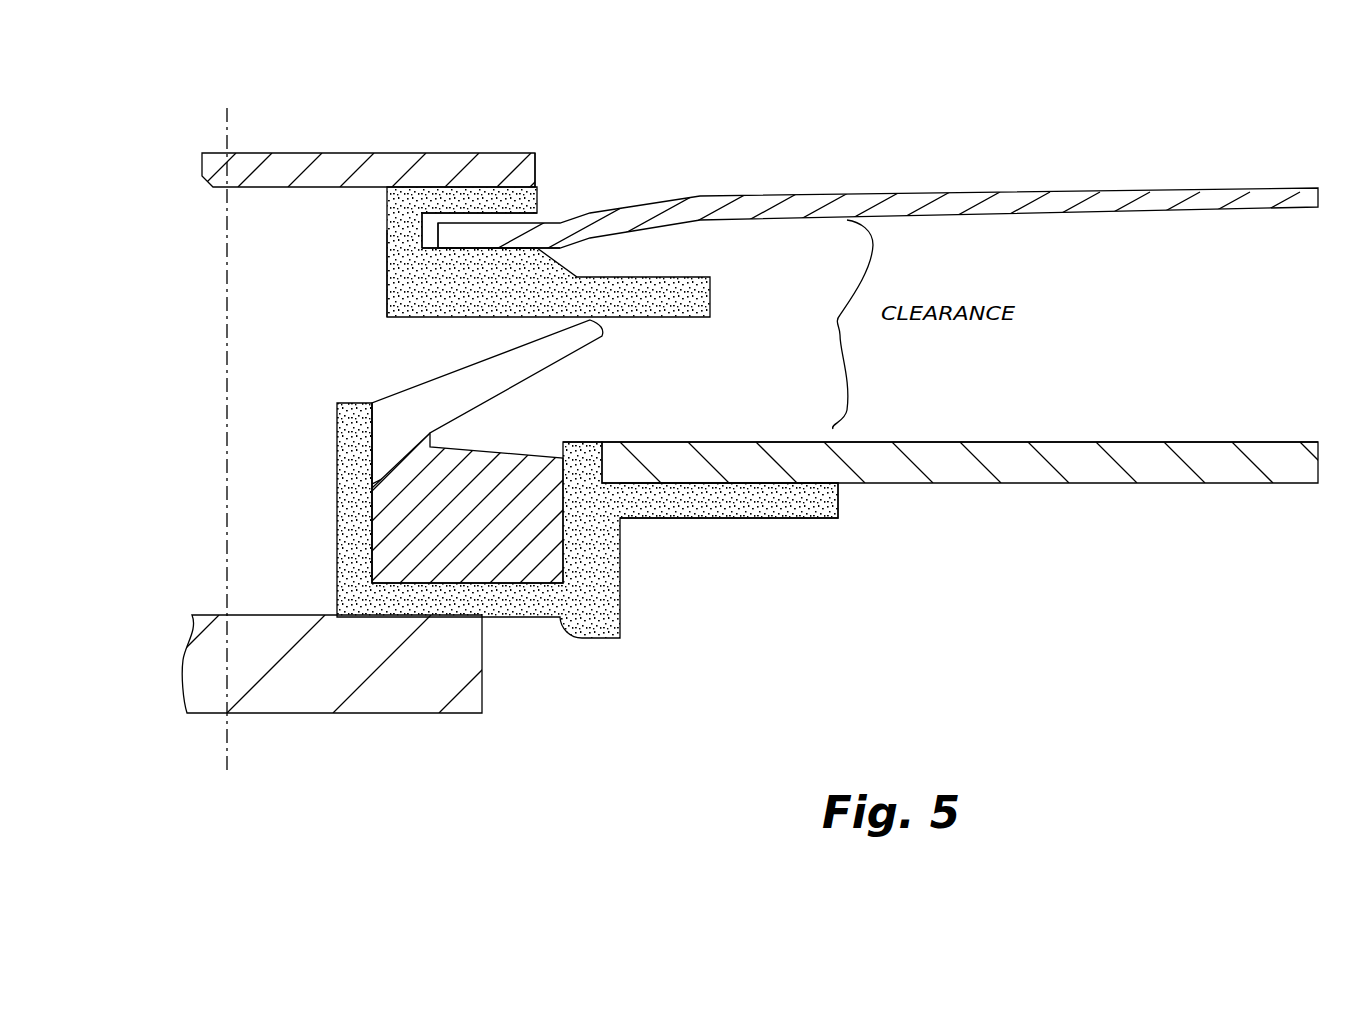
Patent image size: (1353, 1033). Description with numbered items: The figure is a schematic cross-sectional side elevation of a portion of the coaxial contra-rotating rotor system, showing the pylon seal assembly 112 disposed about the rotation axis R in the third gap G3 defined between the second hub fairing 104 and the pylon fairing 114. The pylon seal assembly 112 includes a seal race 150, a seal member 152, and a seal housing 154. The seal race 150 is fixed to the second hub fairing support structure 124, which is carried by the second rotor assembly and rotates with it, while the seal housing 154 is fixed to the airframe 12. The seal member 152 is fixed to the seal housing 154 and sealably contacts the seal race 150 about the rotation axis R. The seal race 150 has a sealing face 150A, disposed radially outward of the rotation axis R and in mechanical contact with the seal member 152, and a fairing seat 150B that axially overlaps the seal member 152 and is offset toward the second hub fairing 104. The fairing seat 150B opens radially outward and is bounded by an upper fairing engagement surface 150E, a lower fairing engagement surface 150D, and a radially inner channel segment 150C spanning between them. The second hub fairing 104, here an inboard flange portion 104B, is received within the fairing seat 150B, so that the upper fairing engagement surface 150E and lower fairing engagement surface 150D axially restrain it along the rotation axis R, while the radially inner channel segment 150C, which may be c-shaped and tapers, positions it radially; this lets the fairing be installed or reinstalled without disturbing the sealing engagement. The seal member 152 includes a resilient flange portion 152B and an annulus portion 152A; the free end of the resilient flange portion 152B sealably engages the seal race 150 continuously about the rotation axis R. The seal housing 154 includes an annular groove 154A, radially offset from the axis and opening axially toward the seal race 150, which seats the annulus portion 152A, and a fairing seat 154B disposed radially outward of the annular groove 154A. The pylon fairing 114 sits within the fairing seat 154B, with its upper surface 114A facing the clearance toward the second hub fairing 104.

The airframe 12 is at (308, 695).
The second hub fairing 104 is at (1057, 198).
The inboard flange portion 104B is at (537, 173).
The pylon seal assembly 112 is at (330, 362).
The pylon fairing 114 is at (952, 460).
The top surface of second panel 114A is at (732, 462).
The second hub fairing support structure 124 is at (298, 158).
The seal race 150 is at (400, 258).
The sealing face 150A is at (390, 322).
The fairing seat 150B is at (436, 212).
The radially inner channel segment 150C is at (430, 234).
The lower fairing engagement surface 150D is at (459, 228).
The upper fairing engagement surface 150E is at (505, 233).
The seal member 152 is at (555, 554).
The annulus portion 152A is at (490, 526).
The resilient flange portion 152B is at (505, 395).
The seal housing 154 is at (545, 553).
The annular groove 154A is at (420, 487).
The fairing seat 154B is at (782, 478).
The rotation axis R is at (228, 130).
The third gap G3 is at (290, 305).